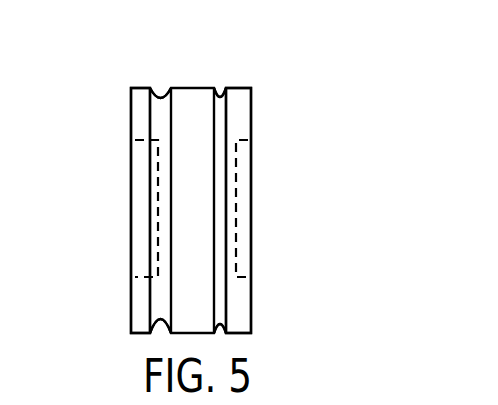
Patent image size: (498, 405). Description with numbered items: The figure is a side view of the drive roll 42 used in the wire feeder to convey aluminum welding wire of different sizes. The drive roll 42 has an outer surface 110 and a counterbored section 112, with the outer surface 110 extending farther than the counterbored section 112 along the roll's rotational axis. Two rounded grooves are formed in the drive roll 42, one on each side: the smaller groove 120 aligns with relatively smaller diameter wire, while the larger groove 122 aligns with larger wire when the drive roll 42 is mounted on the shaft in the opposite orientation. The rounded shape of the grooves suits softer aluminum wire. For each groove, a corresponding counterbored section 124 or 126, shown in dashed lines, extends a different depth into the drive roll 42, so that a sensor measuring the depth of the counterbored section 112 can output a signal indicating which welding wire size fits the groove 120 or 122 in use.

The drive roll 42 is at (82, 142).
The outer surface 110 is at (131, 108).
The counterbored section 112 is at (183, 208).
The smaller groove 120 is at (219, 97).
The larger groove 122 is at (160, 97).
The counterbored section 124 is at (237, 195).
The counterbored section 126 is at (157, 217).